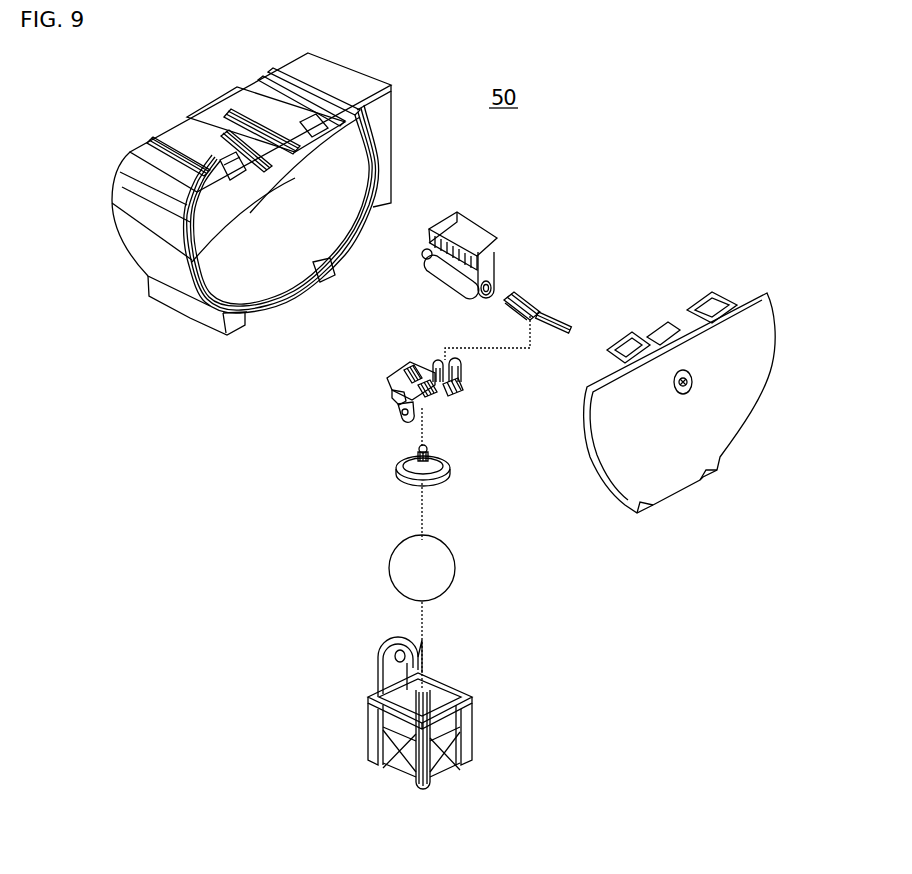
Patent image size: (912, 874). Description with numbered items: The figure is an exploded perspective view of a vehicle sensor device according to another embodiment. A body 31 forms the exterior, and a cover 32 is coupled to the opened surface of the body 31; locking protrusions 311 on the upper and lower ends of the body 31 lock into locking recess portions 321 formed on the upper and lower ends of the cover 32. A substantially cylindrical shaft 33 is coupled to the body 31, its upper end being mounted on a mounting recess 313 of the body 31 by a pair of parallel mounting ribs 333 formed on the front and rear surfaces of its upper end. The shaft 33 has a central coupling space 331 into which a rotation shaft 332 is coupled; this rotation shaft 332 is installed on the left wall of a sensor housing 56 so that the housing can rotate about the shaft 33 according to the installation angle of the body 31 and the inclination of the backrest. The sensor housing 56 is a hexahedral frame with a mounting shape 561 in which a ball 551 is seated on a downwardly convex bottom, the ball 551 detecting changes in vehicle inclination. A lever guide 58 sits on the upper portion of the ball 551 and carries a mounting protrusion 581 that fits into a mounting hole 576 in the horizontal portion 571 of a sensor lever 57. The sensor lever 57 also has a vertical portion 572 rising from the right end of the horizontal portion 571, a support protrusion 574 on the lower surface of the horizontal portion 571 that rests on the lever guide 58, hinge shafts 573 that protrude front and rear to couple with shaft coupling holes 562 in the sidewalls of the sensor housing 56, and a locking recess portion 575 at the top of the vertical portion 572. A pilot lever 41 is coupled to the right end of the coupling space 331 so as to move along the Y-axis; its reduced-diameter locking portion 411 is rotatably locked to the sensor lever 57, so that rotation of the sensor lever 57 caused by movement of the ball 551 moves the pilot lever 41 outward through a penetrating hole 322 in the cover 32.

The body 31 is at (247, 92).
The locking protrusions 311 is at (230, 160).
The mounting recess 313 is at (258, 184).
The shaft 33 is at (492, 258).
The coupling space 331 is at (494, 279).
The rotation shaft 332 is at (424, 260).
The mounting ribs 333 is at (430, 231).
The locking portion 411 is at (538, 306).
The pilot lever 41 is at (543, 333).
The sensor lever 57 is at (375, 373).
The horizontal portion 571 is at (403, 367).
The mounting hole 576 is at (434, 362).
The link pin 575 is at (462, 362).
The vertical portion 572 is at (460, 382).
The support protrusion 574 is at (392, 393).
The hinge shafts 573 is at (400, 414).
The lever guide 58 is at (442, 470).
The mounting protrusion 581 is at (425, 452).
The ball 551 is at (455, 568).
The sensor housing 56 is at (368, 733).
The mounting shape 561 is at (433, 687).
The shaft coupling holes 562 is at (450, 695).
The cover 32 is at (748, 423).
The locking recess portions 321 is at (685, 310).
The penetrating hole 322 is at (692, 370).